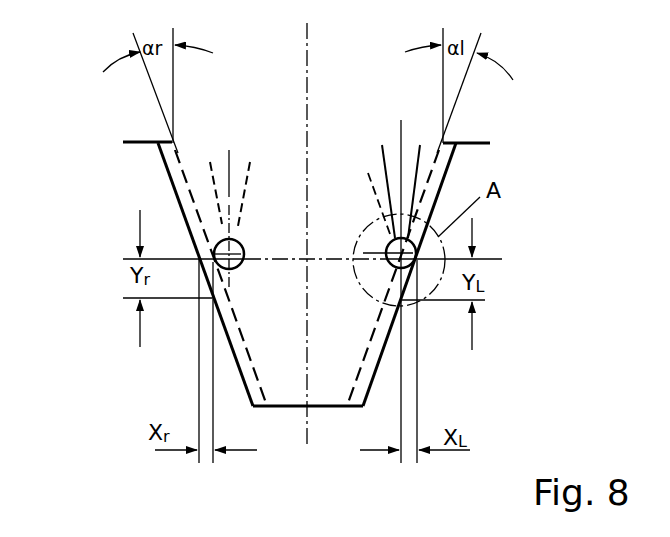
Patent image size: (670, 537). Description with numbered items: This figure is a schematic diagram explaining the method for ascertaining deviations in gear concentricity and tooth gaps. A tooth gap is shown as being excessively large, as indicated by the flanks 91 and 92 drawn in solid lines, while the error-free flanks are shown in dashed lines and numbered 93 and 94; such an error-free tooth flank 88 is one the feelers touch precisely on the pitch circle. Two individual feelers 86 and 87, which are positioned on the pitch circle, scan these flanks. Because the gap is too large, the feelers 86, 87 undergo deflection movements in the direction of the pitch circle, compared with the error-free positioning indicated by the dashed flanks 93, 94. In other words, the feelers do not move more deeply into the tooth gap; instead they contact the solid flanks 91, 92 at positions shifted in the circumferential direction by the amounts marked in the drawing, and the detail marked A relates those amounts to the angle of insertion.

The feeler 86 is at (249, 163).
The feeler 87 is at (381, 170).
The error-free tooth flank 88 is at (493, 265).
The flank 91 is at (460, 156).
The flank 92 is at (172, 184).
The error-free flank 93 is at (434, 168).
The error-free flank 94 is at (178, 150).